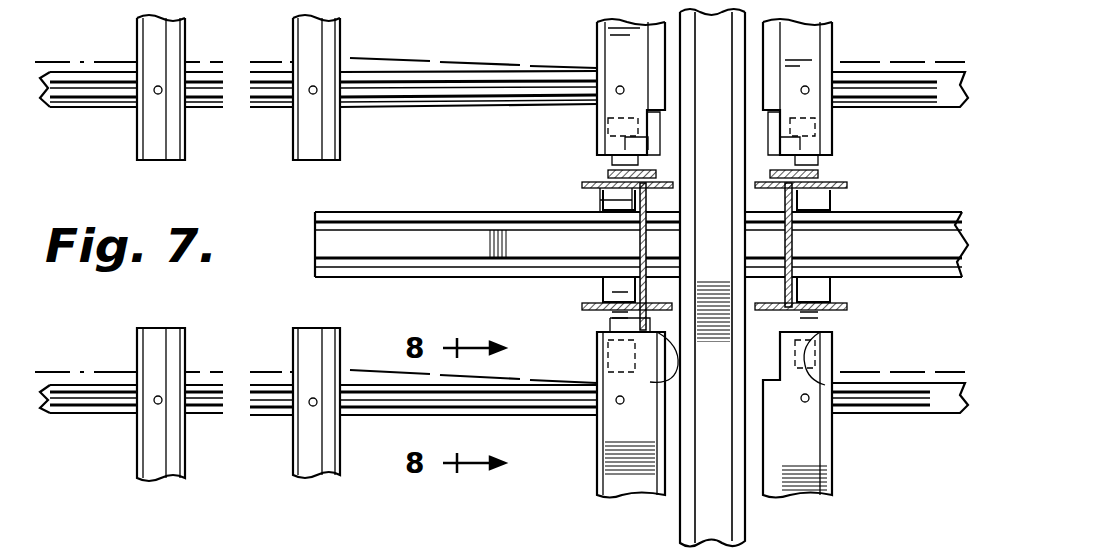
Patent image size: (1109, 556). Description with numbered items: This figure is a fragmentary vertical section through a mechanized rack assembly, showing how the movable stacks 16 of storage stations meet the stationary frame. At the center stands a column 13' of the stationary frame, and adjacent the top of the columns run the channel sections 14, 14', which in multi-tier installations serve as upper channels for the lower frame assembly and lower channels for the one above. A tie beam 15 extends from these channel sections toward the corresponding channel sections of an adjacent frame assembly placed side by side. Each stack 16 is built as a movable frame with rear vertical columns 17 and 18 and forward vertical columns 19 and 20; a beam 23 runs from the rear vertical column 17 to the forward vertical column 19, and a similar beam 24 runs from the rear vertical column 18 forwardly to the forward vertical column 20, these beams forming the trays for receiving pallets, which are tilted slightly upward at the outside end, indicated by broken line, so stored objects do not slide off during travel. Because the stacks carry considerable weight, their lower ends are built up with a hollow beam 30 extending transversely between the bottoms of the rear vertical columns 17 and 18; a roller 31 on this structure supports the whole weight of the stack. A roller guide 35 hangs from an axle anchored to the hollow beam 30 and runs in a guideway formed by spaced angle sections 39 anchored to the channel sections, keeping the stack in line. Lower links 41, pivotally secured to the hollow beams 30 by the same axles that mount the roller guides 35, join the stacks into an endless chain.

The column 13' is at (751, 282).
The channel section 14 is at (608, 241).
The channel section 14' is at (744, 245).
The tie beam 15 is at (318, 240).
The stack of storage stations 16 is at (130, 36).
The rear vertical column 17 is at (617, 40).
The rear vertical column 18 is at (810, 33).
The forward vertical column 19 is at (175, 142).
The forward vertical column 20 is at (328, 38).
The beam 23 is at (85, 105).
The beam 24 is at (400, 100).
The hollow beam 30 is at (612, 125).
The roller 31 is at (625, 143).
The roller guide 35 is at (640, 212).
The angle section 39 is at (583, 185).
The lower link 41 is at (660, 170).